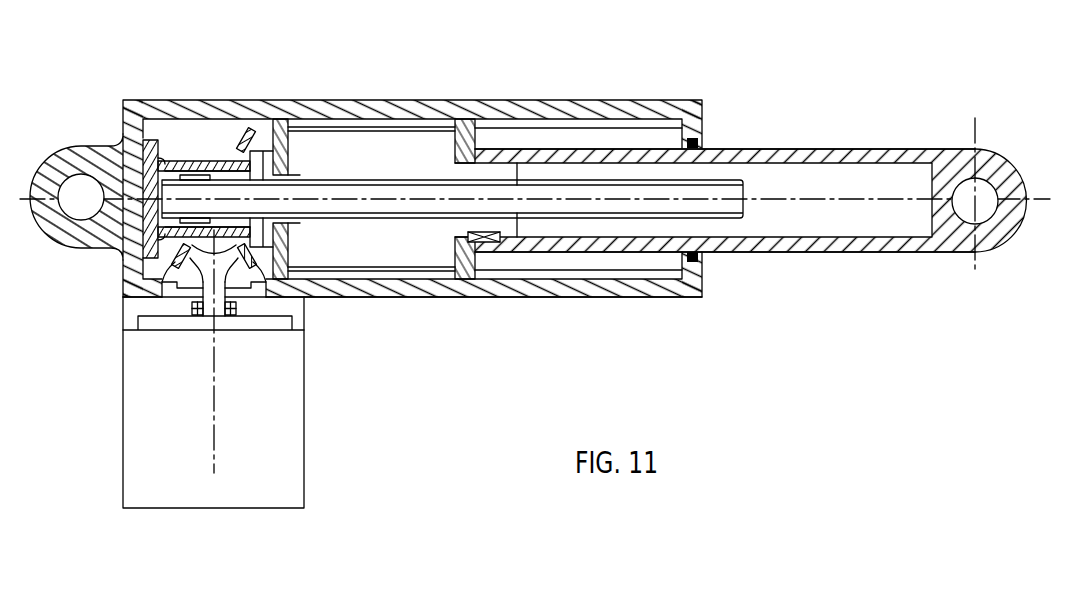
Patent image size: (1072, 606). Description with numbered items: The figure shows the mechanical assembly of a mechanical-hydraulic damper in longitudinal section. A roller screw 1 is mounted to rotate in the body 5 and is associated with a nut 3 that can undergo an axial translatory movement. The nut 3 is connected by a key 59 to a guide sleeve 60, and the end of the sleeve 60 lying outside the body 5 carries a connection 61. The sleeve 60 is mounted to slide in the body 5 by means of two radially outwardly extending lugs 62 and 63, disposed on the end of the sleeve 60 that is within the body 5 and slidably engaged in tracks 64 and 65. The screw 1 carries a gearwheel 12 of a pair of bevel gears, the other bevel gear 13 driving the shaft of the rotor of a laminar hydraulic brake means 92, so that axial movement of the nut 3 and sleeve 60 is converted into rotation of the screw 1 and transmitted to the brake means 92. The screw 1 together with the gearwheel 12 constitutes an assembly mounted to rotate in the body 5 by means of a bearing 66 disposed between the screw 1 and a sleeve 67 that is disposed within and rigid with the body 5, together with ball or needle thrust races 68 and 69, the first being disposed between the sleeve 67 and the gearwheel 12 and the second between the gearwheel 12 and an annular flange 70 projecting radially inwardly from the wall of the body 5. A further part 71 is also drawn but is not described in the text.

The roller screw 1 is at (395, 200).
The nut 3 is at (487, 176).
The body 5 is at (405, 283).
The gearwheel 12 is at (250, 150).
The bevel gear 13 is at (178, 255).
The key 59 is at (497, 245).
The guide sleeve 60 is at (775, 254).
The connection 61 is at (987, 235).
The lug 62 is at (467, 270).
The lug 63 is at (467, 118).
The track 64 is at (636, 273).
The track 65 is at (636, 127).
The bearing 66 is at (180, 170).
The sleeve 67 is at (118, 140).
The ball or needle thrust race 68 is at (236, 157).
The ball or needle thrust race 69 is at (283, 156).
The annular flange 70 is at (280, 250).
The nuts 71 is at (207, 309).
The laminar hydraulic brake means 92 is at (270, 459).